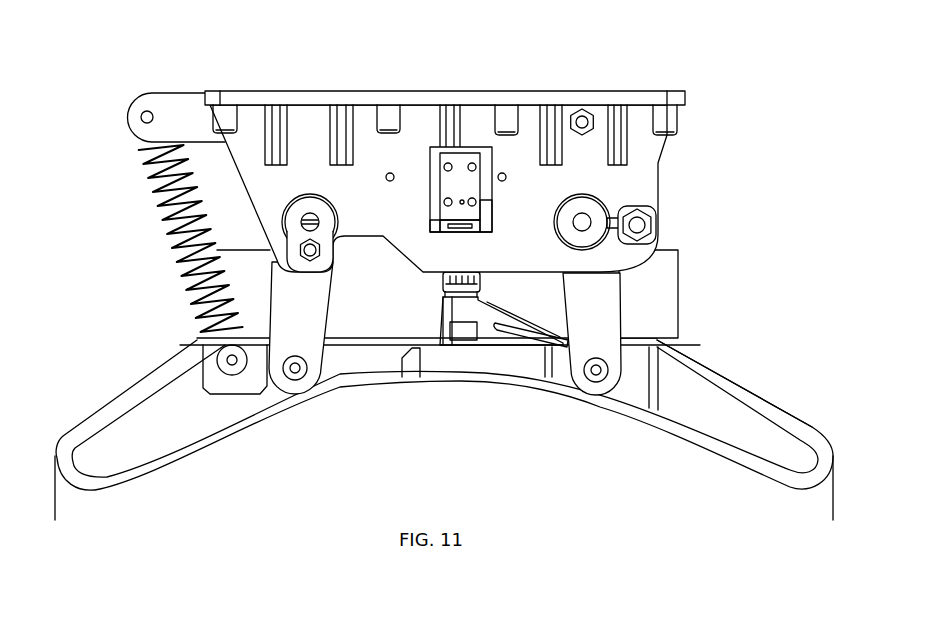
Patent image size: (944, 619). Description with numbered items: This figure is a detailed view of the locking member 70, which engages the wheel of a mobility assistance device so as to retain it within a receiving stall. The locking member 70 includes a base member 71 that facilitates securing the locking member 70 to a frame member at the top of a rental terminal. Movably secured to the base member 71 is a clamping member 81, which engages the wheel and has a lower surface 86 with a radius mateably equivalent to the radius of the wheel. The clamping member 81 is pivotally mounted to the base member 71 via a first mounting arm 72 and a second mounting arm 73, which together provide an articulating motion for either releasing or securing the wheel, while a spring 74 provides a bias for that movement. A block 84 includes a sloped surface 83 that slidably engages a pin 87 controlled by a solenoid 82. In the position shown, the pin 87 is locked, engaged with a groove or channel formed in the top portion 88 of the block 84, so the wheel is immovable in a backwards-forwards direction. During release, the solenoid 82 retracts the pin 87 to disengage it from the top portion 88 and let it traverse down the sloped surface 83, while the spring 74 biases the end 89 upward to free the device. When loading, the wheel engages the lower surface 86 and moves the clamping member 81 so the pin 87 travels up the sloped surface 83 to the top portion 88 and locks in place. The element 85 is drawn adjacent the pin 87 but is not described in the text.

The locking member 70 is at (737, 102).
The base member 71 is at (400, 150).
The first mounting arm 72 is at (302, 307).
The second mounting arm 73 is at (597, 323).
The spring 74 is at (165, 233).
The clamping member 81 is at (712, 403).
The solenoid 82 is at (457, 187).
The sloped surface 83 is at (463, 278).
The block 84 is at (497, 323).
The connector block 85 is at (463, 278).
The lower surface 86 is at (207, 433).
The pin 87 is at (437, 297).
The top portion 88 is at (443, 308).
The end 89 is at (56, 470).